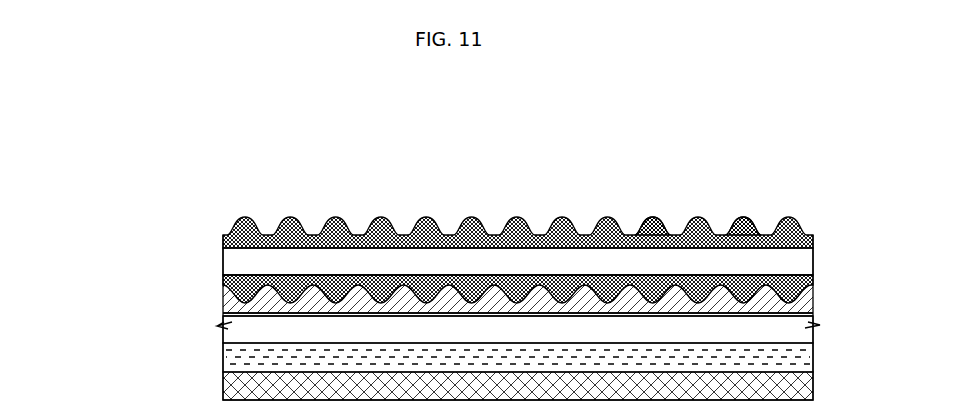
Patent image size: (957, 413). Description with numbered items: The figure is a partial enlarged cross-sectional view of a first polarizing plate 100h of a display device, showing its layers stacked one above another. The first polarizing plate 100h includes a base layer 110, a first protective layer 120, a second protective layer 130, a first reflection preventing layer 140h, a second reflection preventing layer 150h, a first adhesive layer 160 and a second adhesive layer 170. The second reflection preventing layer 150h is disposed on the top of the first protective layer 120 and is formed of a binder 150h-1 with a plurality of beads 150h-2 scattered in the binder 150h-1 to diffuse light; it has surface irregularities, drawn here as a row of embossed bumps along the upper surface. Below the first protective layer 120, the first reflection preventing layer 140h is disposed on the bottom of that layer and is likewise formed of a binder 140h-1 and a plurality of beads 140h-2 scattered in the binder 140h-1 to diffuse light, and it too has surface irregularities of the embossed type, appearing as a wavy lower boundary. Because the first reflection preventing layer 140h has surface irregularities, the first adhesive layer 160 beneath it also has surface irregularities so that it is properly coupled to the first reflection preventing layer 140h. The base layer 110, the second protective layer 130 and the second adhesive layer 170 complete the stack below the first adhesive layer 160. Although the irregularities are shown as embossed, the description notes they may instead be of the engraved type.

The first polarizing plate 100h is at (550, 143).
The base layer 110 is at (813, 331).
The first protective layer 120 is at (813, 257).
The second protective layer 130 is at (813, 361).
The first reflection preventing layer 140h is at (425, 295).
The binder 140h-1 is at (223, 280).
The beads 140h-2 is at (223, 296).
The second reflection preventing layer 150h is at (765, 151).
The binder 150h-1 is at (659, 216).
The beads 150h-2 is at (746, 216).
The first adhesive layer 160 is at (813, 309).
The second adhesive layer 170 is at (813, 389).